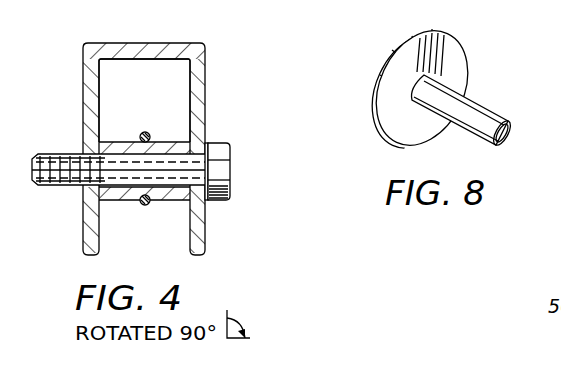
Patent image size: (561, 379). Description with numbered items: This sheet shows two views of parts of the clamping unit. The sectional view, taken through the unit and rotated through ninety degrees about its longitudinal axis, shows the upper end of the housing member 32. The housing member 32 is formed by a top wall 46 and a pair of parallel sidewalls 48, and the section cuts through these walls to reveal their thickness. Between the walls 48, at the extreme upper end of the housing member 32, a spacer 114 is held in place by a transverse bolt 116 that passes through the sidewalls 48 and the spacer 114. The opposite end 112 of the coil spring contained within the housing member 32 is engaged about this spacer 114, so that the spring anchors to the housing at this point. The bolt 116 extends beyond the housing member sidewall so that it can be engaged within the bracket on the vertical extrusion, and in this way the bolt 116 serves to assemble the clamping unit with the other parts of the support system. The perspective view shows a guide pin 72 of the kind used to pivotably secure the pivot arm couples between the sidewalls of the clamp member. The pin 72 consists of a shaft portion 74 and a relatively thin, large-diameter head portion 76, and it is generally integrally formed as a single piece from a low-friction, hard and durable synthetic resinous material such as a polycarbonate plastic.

In FIG. 4, the housing member 32 is at (169, 41).
In FIG. 4, the top wall 46 is at (192, 50).
In FIG. 4, the sidewalls 48 is at (197, 90).
In FIG. 4, the opposite end of the spring 112 is at (145, 206).
In FIG. 4, the spacer 114 is at (167, 192).
In FIG. 4, the transverse bolt 116 is at (222, 172).
In FIG. 8, the guide pin 72 is at (368, 126).
In FIG. 8, the shaft portion 74 is at (483, 113).
In FIG. 8, the head portion 76 is at (455, 69).